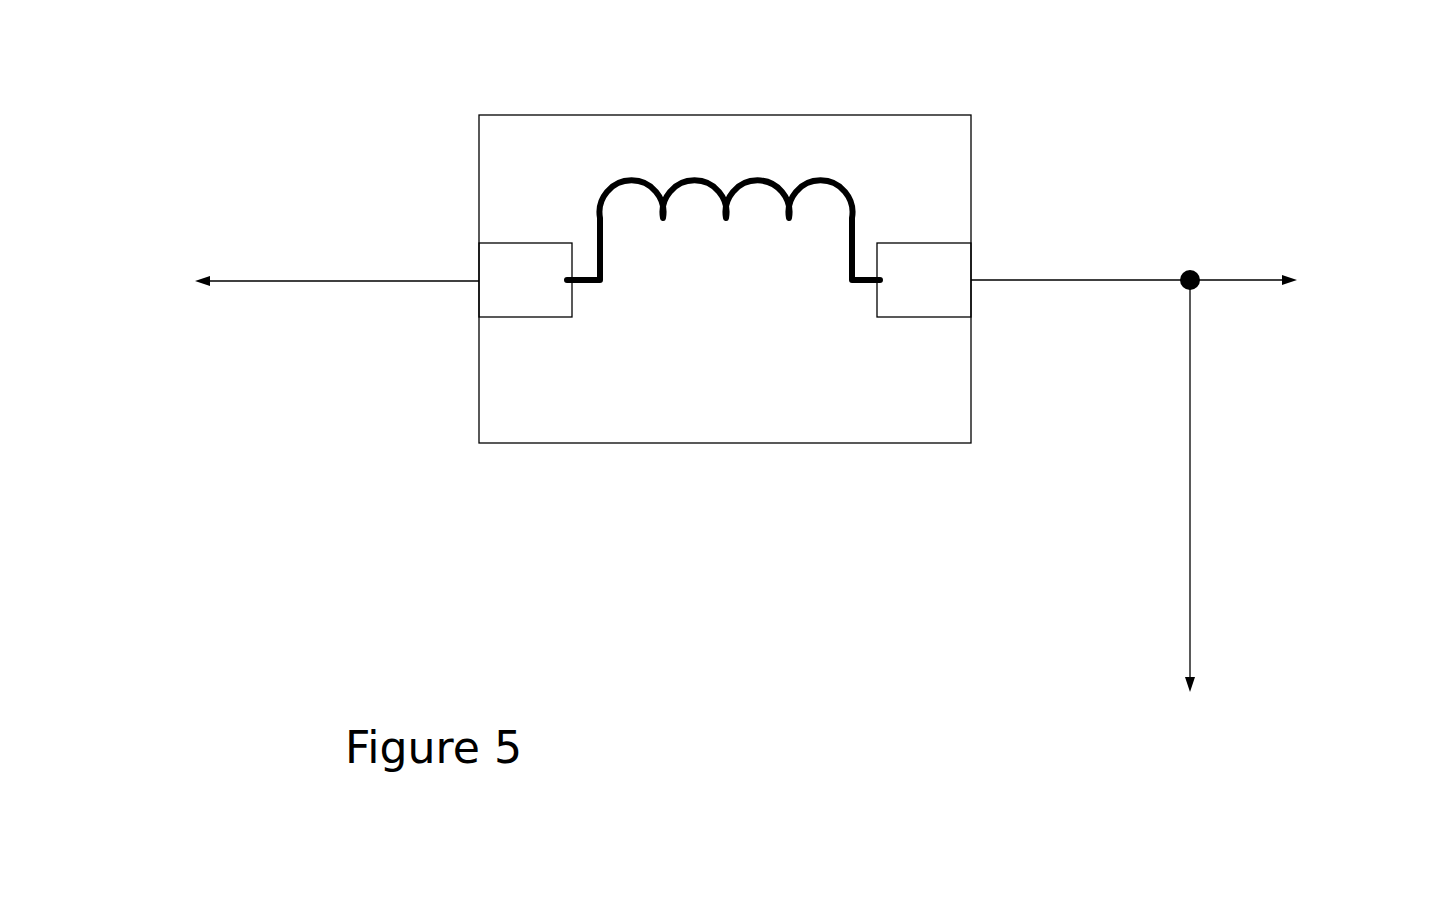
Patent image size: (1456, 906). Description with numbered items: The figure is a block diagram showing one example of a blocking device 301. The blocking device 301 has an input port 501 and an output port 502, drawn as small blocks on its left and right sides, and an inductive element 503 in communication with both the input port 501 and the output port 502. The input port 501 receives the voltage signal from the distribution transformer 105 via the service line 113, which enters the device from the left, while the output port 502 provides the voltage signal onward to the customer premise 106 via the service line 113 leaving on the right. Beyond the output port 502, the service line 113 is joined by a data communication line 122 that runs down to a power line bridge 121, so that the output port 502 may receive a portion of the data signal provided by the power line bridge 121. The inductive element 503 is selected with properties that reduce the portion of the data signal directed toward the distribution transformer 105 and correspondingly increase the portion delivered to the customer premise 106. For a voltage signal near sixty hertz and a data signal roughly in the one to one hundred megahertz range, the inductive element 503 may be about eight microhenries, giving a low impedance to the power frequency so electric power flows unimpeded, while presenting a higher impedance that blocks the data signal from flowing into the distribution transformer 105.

The blocking device 301 is at (725, 250).
The input port 501 is at (490, 256).
The output port 502 is at (967, 253).
The inductive element 503 is at (723, 243).
The service line 113 is at (746, 286).
The distribution transformer 105 is at (157, 316).
The customer premise 106 is at (1385, 284).
The data communication line 122 is at (1178, 652).
The power line bridge 121 is at (1190, 746).